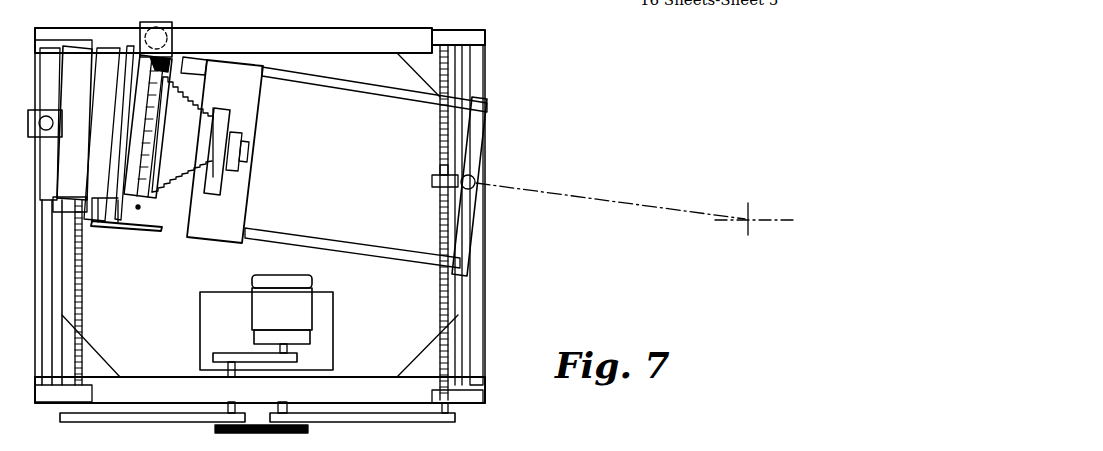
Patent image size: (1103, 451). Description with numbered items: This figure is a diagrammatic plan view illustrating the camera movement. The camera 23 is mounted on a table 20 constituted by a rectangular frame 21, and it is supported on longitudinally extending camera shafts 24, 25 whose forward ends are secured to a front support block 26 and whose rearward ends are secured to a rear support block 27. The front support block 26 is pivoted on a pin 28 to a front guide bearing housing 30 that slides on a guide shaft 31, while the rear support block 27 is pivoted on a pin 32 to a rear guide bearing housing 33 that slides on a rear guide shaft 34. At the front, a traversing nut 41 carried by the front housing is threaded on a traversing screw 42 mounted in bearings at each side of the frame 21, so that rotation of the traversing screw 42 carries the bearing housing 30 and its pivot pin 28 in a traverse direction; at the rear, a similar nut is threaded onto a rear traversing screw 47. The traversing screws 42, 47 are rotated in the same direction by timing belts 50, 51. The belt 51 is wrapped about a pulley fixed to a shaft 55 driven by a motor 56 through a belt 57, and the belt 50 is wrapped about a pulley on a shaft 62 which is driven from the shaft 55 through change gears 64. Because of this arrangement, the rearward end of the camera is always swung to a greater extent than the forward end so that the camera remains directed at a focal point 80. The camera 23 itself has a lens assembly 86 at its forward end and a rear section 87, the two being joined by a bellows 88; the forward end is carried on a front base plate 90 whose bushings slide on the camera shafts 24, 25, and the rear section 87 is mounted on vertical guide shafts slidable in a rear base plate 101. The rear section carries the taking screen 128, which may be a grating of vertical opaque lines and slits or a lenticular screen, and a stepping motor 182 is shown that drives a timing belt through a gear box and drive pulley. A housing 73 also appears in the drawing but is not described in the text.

The table 20 is at (489, 49).
The rectangular frame 21 is at (233, 40).
The camera 23 is at (214, 104).
The camera shaft 24 is at (366, 240).
The camera shaft 25 is at (348, 90).
The front support block 26 is at (480, 157).
The rear support block 27 is at (70, 222).
The pin 28 is at (476, 182).
The front guide bearing housing 30 is at (483, 243).
The guide shaft 31 is at (470, 295).
The pin 32 is at (70, 118).
The rear guide bearing housing 33 is at (53, 167).
The rear guide shaft 34 is at (63, 272).
The traversing nut 41 is at (433, 174).
The traversing screw 42 is at (440, 128).
The rear traversing screw 47 is at (83, 302).
The timing belt 50 is at (400, 419).
The timing belt 51 is at (155, 416).
The shaft 55 is at (229, 378).
The motor 56 is at (282, 314).
The belt 57 is at (240, 352).
The shaft 62 is at (286, 405).
The change gears 64 is at (310, 431).
The motor housing 73 is at (334, 357).
The focal point 80 is at (753, 214).
The lens assembly 86 is at (246, 149).
The rear section 87 is at (138, 210).
The bellows 88 is at (217, 161).
The front base plate 90 is at (253, 185).
The rear base plate 101 is at (163, 233).
The taking screen 128 is at (158, 120).
The stepping motor 182 is at (174, 41).